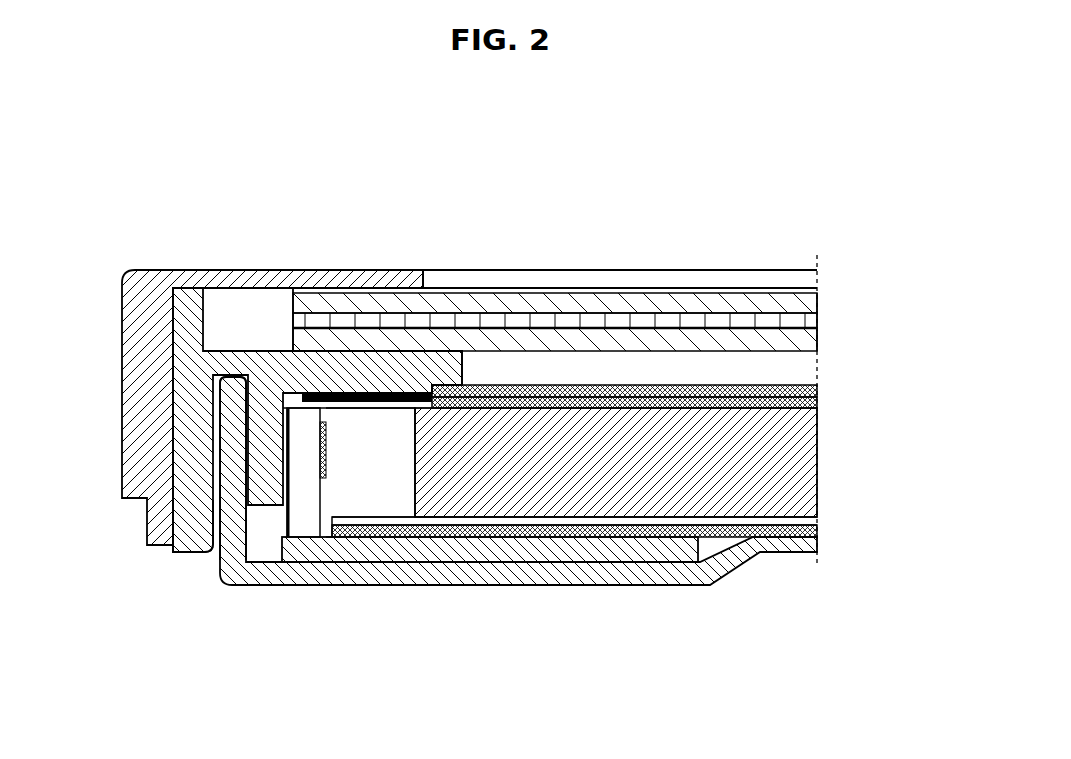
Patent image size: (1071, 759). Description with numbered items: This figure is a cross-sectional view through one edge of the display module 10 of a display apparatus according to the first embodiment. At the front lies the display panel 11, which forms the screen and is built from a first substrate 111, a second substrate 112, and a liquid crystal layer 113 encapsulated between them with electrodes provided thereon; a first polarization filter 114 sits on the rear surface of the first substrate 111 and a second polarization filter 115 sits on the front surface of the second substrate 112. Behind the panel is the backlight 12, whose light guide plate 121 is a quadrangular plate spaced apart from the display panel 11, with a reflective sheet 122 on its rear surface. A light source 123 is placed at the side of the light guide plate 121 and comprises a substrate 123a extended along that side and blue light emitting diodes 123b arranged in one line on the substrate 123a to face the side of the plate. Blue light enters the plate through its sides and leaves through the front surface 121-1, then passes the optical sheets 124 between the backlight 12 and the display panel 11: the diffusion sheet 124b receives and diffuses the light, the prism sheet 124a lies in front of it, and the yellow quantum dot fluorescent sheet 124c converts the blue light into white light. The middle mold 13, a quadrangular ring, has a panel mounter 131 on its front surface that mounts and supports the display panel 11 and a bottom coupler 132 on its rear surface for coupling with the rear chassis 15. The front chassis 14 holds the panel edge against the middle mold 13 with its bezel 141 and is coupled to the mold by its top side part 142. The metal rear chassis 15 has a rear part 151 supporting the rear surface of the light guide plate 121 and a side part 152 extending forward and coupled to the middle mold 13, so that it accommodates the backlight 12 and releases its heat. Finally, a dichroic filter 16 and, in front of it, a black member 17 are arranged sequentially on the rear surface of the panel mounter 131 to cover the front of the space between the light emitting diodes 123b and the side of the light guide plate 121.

The display module 10 is at (448, 154).
The display panel 11 is at (583, 278).
The first substrate 111 is at (819, 340).
The second substrate 112 is at (819, 302).
The liquid crystal layer 113 is at (819, 321).
The first polarization filter 114 is at (819, 338).
The second polarization filter 115 is at (819, 282).
The backlight 12 is at (840, 469).
The light guide plate 121 is at (819, 521).
The front surface 121-1 is at (427, 516).
The reflective sheet 122 is at (819, 531).
The light source 123 is at (268, 658).
The substrate 123a is at (345, 548).
The light emitting diode 123b is at (296, 512).
The optical sheets 124 is at (913, 384).
The prism sheet 124a is at (819, 391).
The diffusion sheet 124b is at (819, 402).
The fluorescent sheet 124c is at (819, 440).
The middle mold 13 is at (121, 379).
The panel mounter 131 is at (332, 352).
The bottom coupler 132 is at (178, 555).
The front chassis 14 is at (168, 258).
The bezel 141 is at (238, 280).
The top side part 142 is at (121, 321).
The rear chassis 15 is at (617, 598).
The rear part 151 is at (500, 572).
The side part 152 is at (222, 560).
The dichroic filter 16 is at (378, 409).
The black member 17 is at (403, 392).